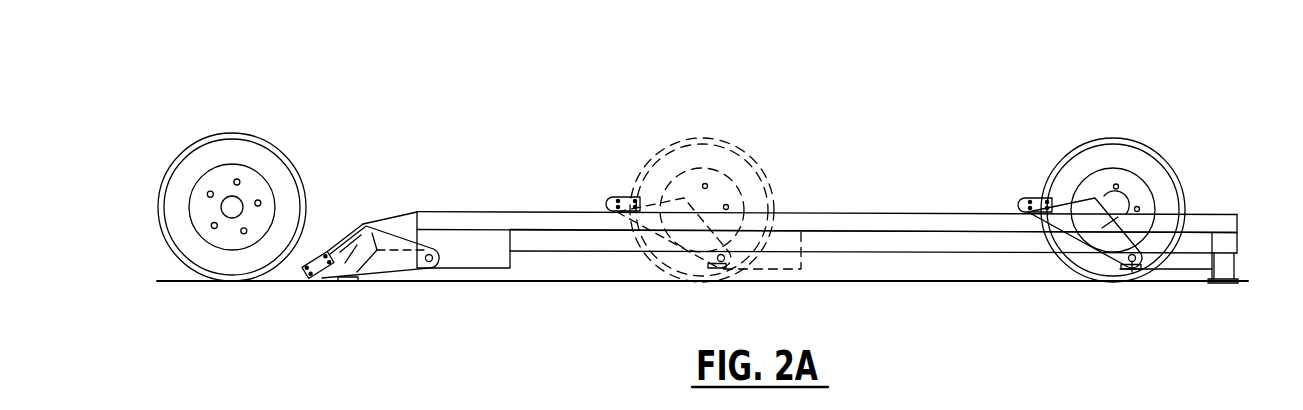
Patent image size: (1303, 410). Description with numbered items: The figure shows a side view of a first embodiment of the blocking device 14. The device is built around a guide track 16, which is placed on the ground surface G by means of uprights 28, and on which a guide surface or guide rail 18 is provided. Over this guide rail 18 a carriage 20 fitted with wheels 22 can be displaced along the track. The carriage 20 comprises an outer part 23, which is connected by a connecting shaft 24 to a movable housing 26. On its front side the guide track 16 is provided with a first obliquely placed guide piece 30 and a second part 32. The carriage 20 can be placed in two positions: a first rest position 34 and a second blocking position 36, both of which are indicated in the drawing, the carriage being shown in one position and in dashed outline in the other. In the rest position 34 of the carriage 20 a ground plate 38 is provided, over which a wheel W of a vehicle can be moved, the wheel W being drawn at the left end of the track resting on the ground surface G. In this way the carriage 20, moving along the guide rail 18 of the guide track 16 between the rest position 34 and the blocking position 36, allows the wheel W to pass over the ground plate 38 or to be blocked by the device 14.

The wheel W is at (228, 148).
The ground G is at (913, 283).
The blocking device 14 is at (328, 116).
The guide track 16 is at (562, 222).
The guide rail 18 is at (537, 200).
The carriage 20 is at (1072, 203).
The wheels 22 is at (303, 276).
The outer part 23 is at (1128, 190).
The connecting shaft 24 is at (1130, 262).
The movable housing 26 is at (1188, 242).
The uprights 28 is at (1223, 263).
The first obliquely placed guide piece 30 is at (350, 262).
The second part 32 is at (402, 227).
The first rest position 34 is at (456, 176).
The second blocking position 36 is at (1207, 147).
The ground plate 38 is at (357, 281).